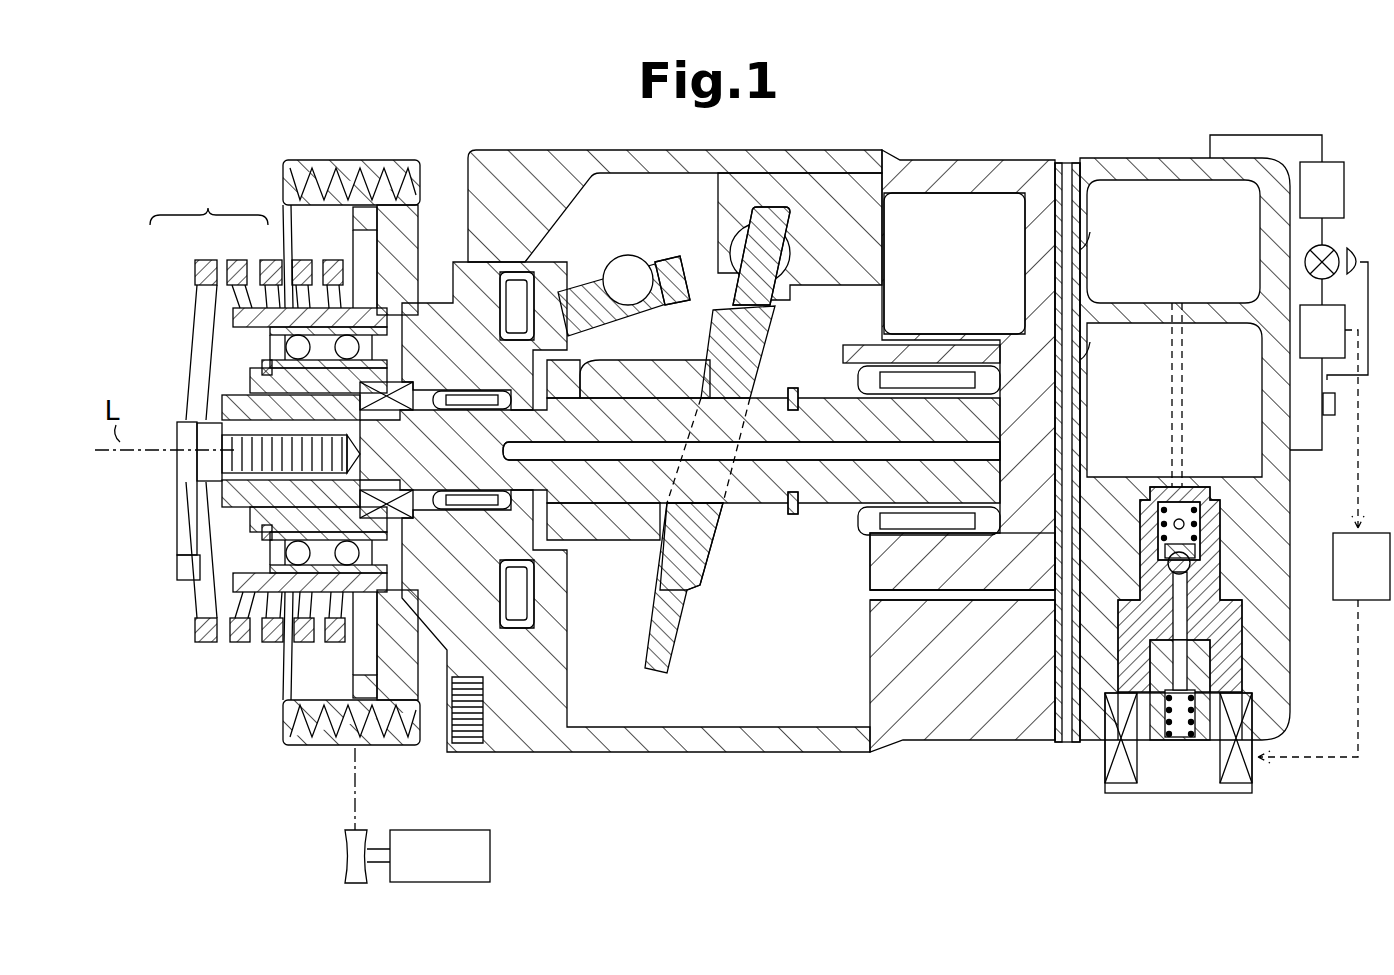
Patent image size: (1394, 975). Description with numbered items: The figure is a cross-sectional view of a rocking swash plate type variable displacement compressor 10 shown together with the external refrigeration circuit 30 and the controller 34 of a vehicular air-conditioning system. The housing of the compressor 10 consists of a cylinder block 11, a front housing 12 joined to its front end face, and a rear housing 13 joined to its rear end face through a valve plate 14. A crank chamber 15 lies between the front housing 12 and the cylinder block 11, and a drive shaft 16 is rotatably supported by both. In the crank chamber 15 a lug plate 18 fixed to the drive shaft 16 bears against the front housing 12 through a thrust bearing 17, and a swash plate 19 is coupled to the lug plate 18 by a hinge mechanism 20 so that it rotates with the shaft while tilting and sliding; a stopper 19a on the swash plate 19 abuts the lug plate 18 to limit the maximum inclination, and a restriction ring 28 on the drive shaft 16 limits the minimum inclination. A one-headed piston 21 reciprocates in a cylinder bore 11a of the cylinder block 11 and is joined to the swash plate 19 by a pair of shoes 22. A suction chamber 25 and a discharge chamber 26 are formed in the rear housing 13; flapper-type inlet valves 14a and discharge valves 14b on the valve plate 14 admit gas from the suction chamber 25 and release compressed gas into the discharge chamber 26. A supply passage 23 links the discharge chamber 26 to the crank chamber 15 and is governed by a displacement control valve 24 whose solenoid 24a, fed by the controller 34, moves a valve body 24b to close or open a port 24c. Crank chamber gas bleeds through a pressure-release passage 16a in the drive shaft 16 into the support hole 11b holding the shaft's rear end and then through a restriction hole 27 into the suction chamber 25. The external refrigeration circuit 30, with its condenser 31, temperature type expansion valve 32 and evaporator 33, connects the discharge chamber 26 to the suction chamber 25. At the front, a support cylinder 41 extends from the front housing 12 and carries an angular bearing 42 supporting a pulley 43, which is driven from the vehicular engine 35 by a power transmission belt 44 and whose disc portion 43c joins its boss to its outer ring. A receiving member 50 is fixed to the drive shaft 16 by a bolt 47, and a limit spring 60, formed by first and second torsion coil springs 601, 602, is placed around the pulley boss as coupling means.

The variable displacement compressor 10 is at (833, 760).
The cylinder block 11 is at (940, 742).
The cylinder bore 11a is at (960, 200).
The support hole 11b is at (985, 592).
The front housing 12 is at (505, 160).
The rear housing 13 is at (1291, 642).
The valve plate 14 is at (1064, 744).
The inlet valve 14a is at (1082, 356).
The discharge valve 14b is at (1082, 232).
The crank chamber 15 is at (797, 679).
The drive shaft 16 is at (753, 505).
The pressure-release passage 16a is at (808, 462).
The thrust bearing 17 is at (503, 305).
The lug plate 18 is at (556, 290).
The swash plate 19 is at (673, 665).
The stopper 19a is at (650, 550).
The hinge mechanism 20 is at (634, 241).
The piston 21 is at (850, 340).
The shoes 22 is at (780, 267).
The supply passage 23 is at (1185, 410).
The displacement control valve 24 is at (1154, 808).
The solenoid 24a is at (1232, 793).
The valve body 24b is at (1195, 565).
The port 24c is at (1190, 583).
The suction chamber 25 is at (1117, 399).
The discharge chamber 26 is at (1190, 276).
The restriction hole 27 is at (1072, 452).
The restriction ring 28 is at (792, 515).
The external refrigeration circuit 30 is at (1287, 124).
The condenser 31 is at (1322, 190).
The temperature type expansion valve 32 is at (1335, 252).
The evaporator 33 is at (1322, 331).
The controller 34 is at (1345, 530).
The vehicular engine 35 is at (456, 830).
The support cylinder 41 is at (258, 368).
The angular bearing 42 is at (292, 347).
The pulley 43 is at (282, 186).
The disc portion 43c is at (420, 250).
The power transmission belt 44 is at (356, 165).
The bolt 47 is at (205, 452).
The receiving member 50 is at (178, 553).
The limit spring 60 is at (247, 453).
The first torsion coil spring 601 is at (233, 260).
The second torsion coil spring 602 is at (197, 260).